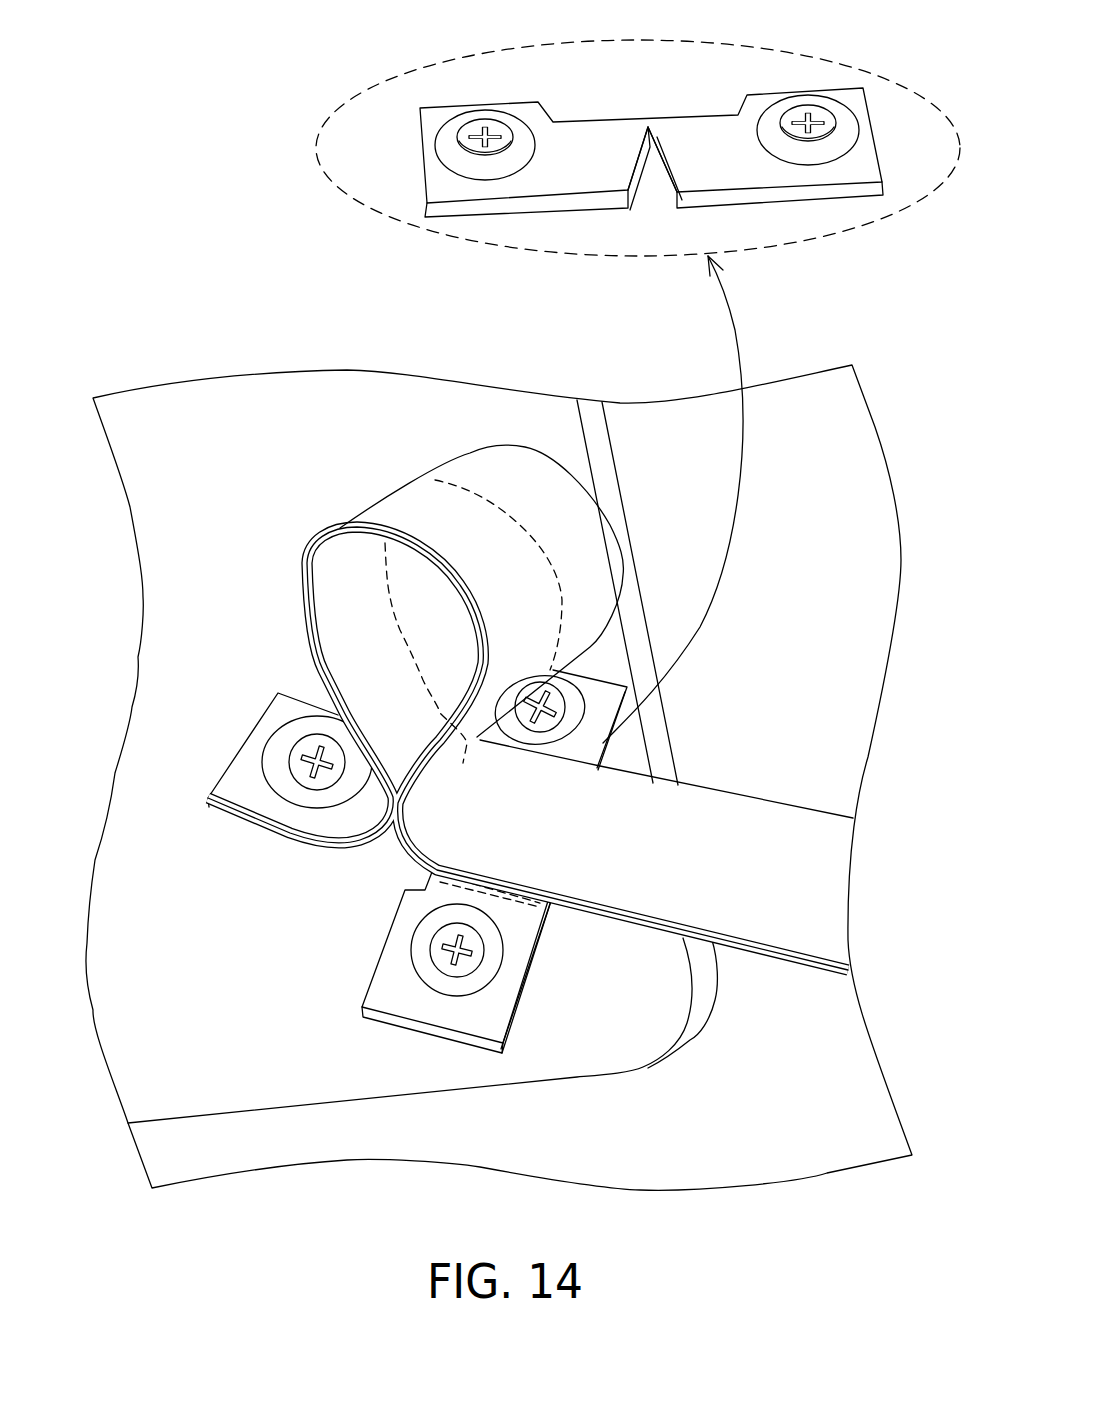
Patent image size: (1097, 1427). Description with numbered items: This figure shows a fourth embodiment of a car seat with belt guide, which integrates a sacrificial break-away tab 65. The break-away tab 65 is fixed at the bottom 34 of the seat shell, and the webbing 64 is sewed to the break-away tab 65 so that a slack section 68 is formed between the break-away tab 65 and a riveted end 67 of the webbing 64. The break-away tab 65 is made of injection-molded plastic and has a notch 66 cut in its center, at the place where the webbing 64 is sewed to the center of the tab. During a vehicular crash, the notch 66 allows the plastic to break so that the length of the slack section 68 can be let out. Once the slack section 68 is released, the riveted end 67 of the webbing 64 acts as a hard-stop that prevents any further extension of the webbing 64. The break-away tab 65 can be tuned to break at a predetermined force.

The bottom 34 is at (418, 1135).
The webbing 64 is at (813, 885).
The break-away tab 65 is at (425, 70).
The notch 66 is at (648, 170).
The riveted end 67 is at (277, 752).
The slack section 68 is at (413, 613).